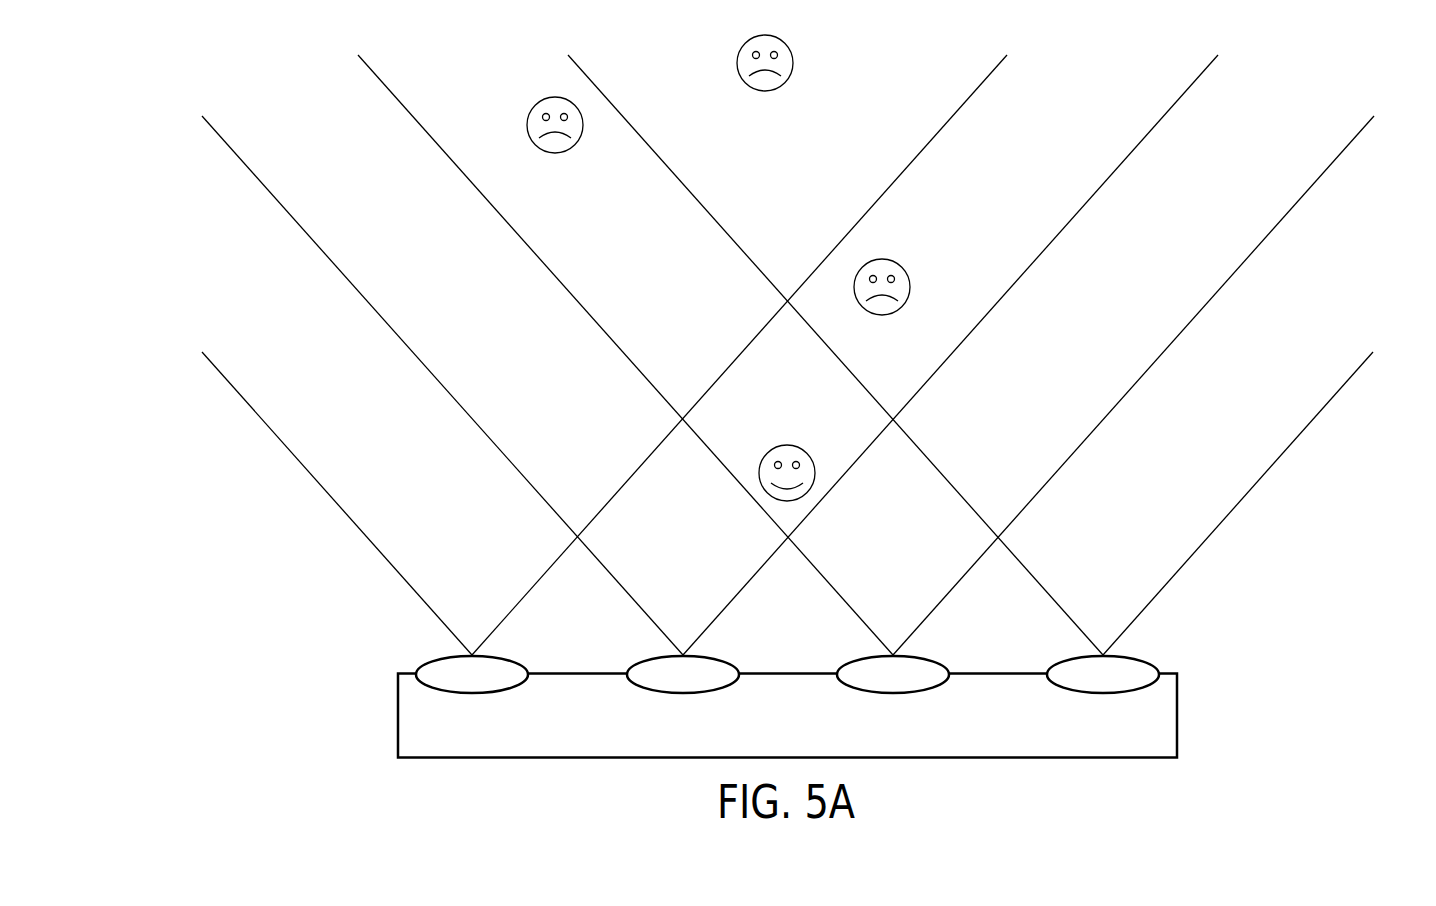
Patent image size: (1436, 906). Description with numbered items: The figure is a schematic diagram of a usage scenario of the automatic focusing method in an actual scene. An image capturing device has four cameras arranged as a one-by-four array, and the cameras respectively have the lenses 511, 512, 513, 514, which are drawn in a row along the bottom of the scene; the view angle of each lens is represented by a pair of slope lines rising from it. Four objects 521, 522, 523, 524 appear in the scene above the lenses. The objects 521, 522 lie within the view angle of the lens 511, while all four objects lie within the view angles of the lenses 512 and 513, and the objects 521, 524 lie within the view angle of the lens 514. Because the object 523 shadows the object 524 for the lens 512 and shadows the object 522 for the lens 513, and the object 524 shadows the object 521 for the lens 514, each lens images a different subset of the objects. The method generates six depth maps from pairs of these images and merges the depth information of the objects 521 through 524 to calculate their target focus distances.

The lens 511 is at (473, 693).
The lens 512 is at (684, 693).
The lens 513 is at (894, 693).
The lens 514 is at (1104, 693).
The object 521 is at (793, 62).
The object 522 is at (538, 99).
The object 523 is at (815, 473).
The object 524 is at (900, 264).